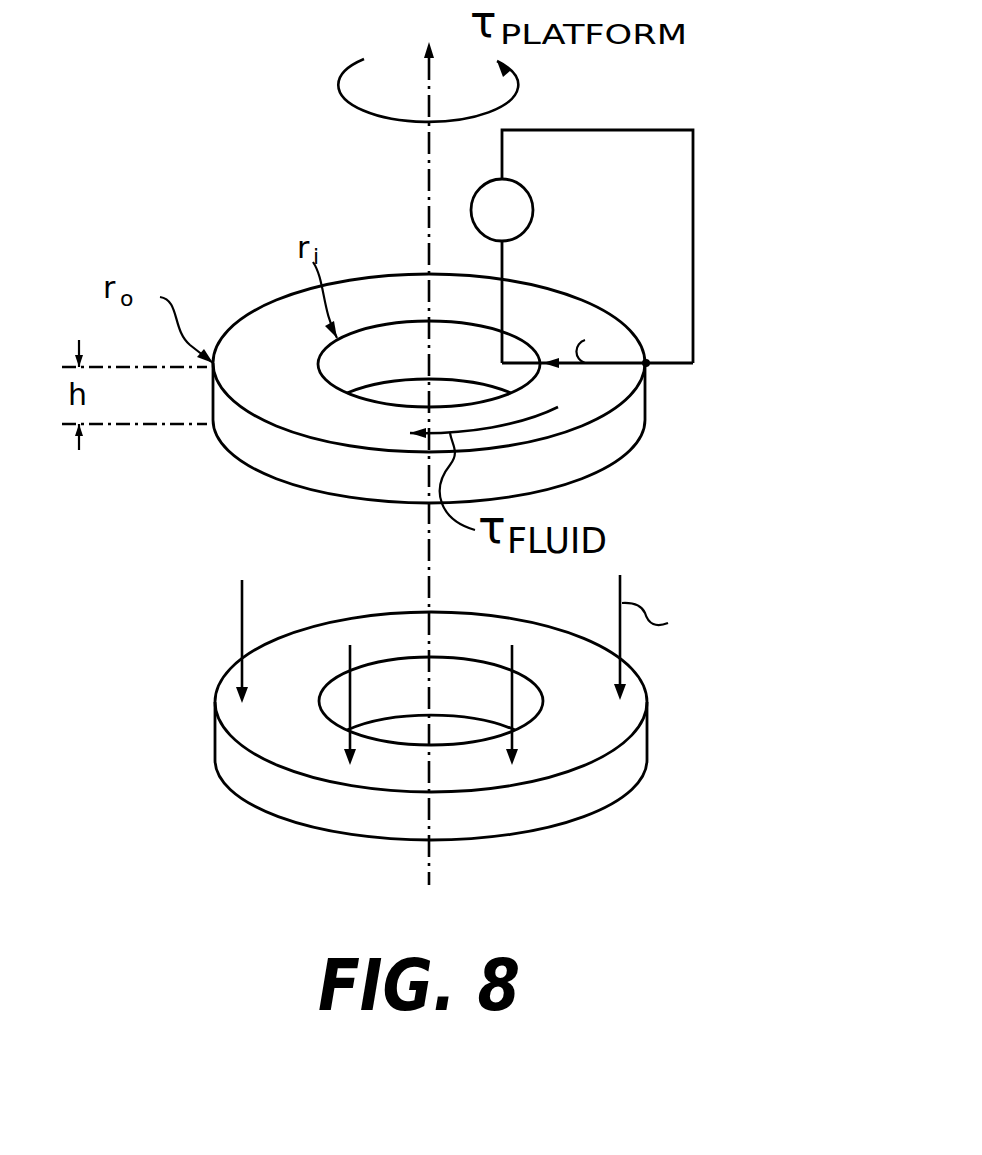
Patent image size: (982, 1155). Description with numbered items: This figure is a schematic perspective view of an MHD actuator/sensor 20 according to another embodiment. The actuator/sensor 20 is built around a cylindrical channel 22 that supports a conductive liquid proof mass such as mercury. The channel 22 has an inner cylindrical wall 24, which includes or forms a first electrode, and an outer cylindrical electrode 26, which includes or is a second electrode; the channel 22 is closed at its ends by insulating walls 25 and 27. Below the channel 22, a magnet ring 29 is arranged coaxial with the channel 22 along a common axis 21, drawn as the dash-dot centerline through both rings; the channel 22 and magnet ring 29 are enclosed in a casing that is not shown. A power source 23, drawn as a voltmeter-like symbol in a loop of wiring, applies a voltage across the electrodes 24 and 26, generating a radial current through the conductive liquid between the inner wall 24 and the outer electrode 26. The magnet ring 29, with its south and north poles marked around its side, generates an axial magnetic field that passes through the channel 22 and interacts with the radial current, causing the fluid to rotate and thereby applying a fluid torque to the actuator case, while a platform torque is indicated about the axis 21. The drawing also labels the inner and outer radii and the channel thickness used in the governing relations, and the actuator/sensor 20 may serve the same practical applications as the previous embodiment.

The MHD actuator/sensor 20 is at (757, 164).
The common axis 21 is at (428, 570).
The cylindrical channel 22 is at (450, 400).
The power source 23 is at (533, 210).
The inner cylindrical wall 24 is at (394, 365).
The insulating wall 25 is at (284, 380).
The outer cylindrical electrode 26 is at (634, 418).
The insulating wall 27 is at (605, 468).
The magnet ring 29 is at (650, 722).